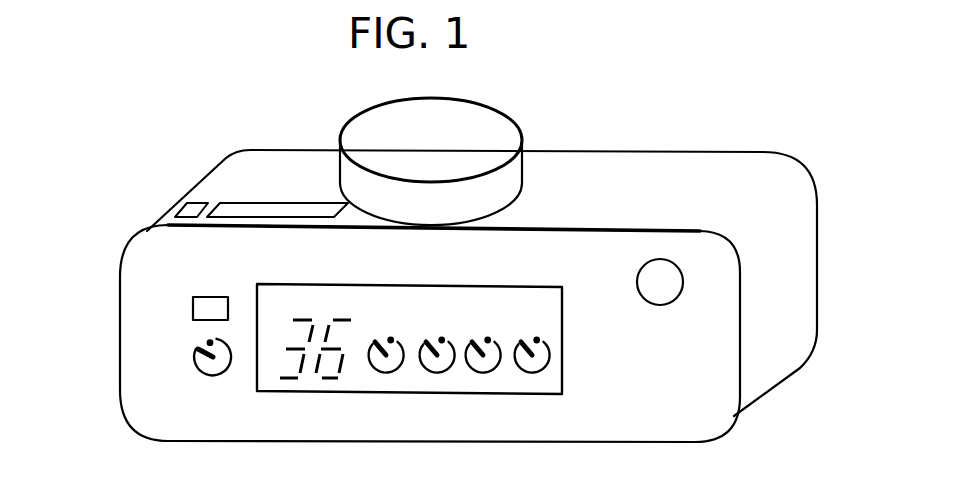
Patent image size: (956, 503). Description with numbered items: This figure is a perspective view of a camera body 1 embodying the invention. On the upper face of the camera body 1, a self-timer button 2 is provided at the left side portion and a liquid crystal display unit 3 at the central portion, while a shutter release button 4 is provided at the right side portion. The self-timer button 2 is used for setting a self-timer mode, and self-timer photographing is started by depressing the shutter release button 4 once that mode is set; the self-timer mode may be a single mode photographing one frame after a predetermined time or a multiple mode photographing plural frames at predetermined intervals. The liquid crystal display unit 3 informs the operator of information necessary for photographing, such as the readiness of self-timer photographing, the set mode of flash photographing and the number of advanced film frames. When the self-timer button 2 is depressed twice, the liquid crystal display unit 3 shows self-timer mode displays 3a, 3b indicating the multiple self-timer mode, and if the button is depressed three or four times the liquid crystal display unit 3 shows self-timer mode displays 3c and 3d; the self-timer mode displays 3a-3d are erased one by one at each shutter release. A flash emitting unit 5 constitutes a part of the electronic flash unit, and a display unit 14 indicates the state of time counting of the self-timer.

The camera body 1 is at (138, 413).
The self-timer button 2 is at (193, 306).
The liquid crystal display unit 3 is at (272, 383).
The self-timer mode display 3a is at (385, 372).
The self-timer mode display 3b is at (436, 372).
The self-timer mode display 3c is at (485, 372).
The self-timer mode display 3d is at (537, 372).
The shutter release button 4 is at (670, 268).
The flash emitting unit 5 is at (227, 207).
The display unit 14 is at (185, 207).